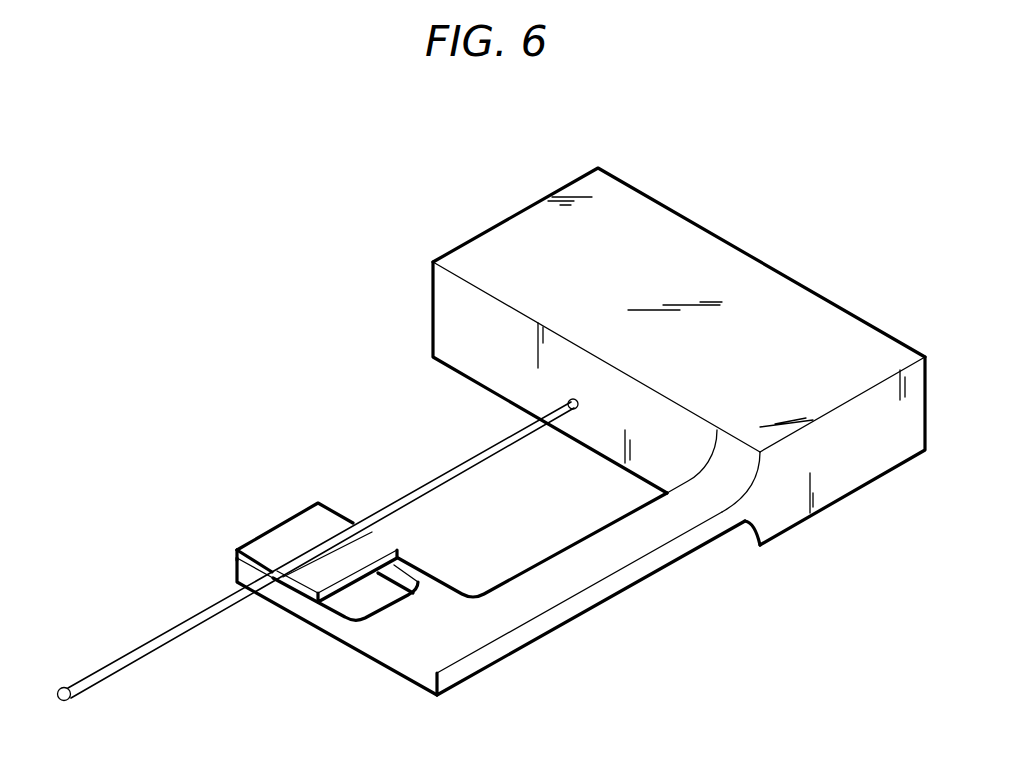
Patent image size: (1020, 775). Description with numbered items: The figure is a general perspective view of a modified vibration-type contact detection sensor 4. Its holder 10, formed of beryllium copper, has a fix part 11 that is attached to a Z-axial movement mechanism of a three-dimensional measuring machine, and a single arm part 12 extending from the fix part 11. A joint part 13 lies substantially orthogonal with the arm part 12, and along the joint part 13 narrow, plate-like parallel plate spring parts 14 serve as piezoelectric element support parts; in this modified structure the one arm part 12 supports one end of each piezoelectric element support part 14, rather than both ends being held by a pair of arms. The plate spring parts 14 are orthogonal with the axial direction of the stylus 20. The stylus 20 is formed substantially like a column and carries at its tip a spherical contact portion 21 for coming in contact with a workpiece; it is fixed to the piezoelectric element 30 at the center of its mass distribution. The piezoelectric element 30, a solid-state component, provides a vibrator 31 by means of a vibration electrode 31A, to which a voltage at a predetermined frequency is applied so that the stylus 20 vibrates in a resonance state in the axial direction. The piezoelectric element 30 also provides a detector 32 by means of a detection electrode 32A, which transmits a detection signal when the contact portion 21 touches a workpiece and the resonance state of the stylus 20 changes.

The vibration-type contact detection sensor 4 is at (711, 184).
The holder 10 is at (679, 356).
The fix part 11 is at (777, 292).
The arm part 12 is at (587, 565).
The joint part 13 is at (438, 625).
The parallel plate spring part 14 is at (412, 570).
The stylus 20 is at (317, 583).
The contact portion 21 is at (66, 703).
The piezoelectric element 30 is at (340, 553).
The vibrator 31 is at (287, 504).
The vibration electrode 31A is at (265, 532).
The detector 32 is at (348, 593).
The detection electrode 32A is at (283, 597).